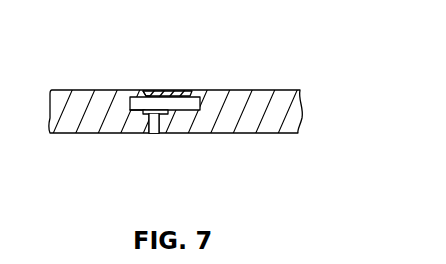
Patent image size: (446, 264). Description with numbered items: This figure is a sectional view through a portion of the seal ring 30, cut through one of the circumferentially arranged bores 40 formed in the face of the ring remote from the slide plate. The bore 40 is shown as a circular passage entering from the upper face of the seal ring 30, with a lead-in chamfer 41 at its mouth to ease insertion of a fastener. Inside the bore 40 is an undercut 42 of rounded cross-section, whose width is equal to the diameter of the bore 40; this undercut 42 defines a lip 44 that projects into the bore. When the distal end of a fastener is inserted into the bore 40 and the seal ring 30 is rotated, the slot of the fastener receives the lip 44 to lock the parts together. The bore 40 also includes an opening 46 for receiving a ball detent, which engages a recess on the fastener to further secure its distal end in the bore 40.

The seal ring 30 is at (307, 99).
The bore 40 is at (198, 90).
The lead-in chamfer 41 is at (147, 90).
The lip 44 is at (160, 90).
The undercut 42 is at (130, 112).
The opening 46 is at (166, 120).